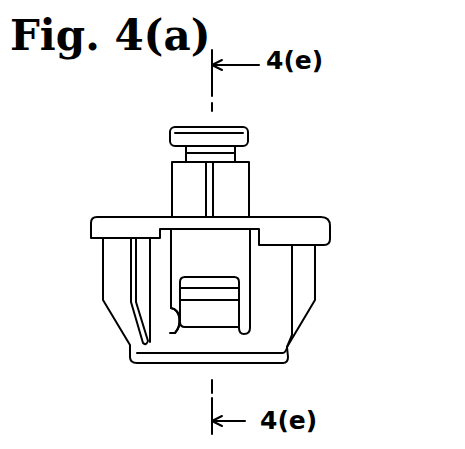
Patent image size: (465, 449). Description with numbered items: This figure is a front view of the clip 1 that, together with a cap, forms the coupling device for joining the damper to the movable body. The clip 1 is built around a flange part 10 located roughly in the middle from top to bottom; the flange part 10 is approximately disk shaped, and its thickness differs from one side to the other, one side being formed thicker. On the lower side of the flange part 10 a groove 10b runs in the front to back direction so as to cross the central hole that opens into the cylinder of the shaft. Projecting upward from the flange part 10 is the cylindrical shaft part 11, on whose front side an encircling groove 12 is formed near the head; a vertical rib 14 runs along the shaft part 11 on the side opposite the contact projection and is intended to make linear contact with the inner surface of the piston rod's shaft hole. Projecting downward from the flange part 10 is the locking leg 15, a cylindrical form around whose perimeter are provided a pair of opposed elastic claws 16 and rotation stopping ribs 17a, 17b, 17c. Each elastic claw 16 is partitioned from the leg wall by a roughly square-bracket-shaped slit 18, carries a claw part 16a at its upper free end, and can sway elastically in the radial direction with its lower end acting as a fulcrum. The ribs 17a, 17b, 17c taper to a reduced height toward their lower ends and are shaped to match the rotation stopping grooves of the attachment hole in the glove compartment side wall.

The clip 1 is at (345, 200).
The flange part 10 is at (100, 227).
The groove 10b is at (199, 234).
The shaft part 11 is at (250, 188).
The encircling groove 12 is at (185, 147).
The vertical rib 14 is at (215, 178).
The locking leg 15 is at (292, 350).
The elastic claw 16 is at (203, 315).
The claw part 16a is at (239, 279).
The rotation stopping rib 17a is at (312, 258).
The rotation stopping rib 17b is at (114, 293).
The rotation stopping rib 17c is at (131, 267).
The slit 18 is at (178, 330).